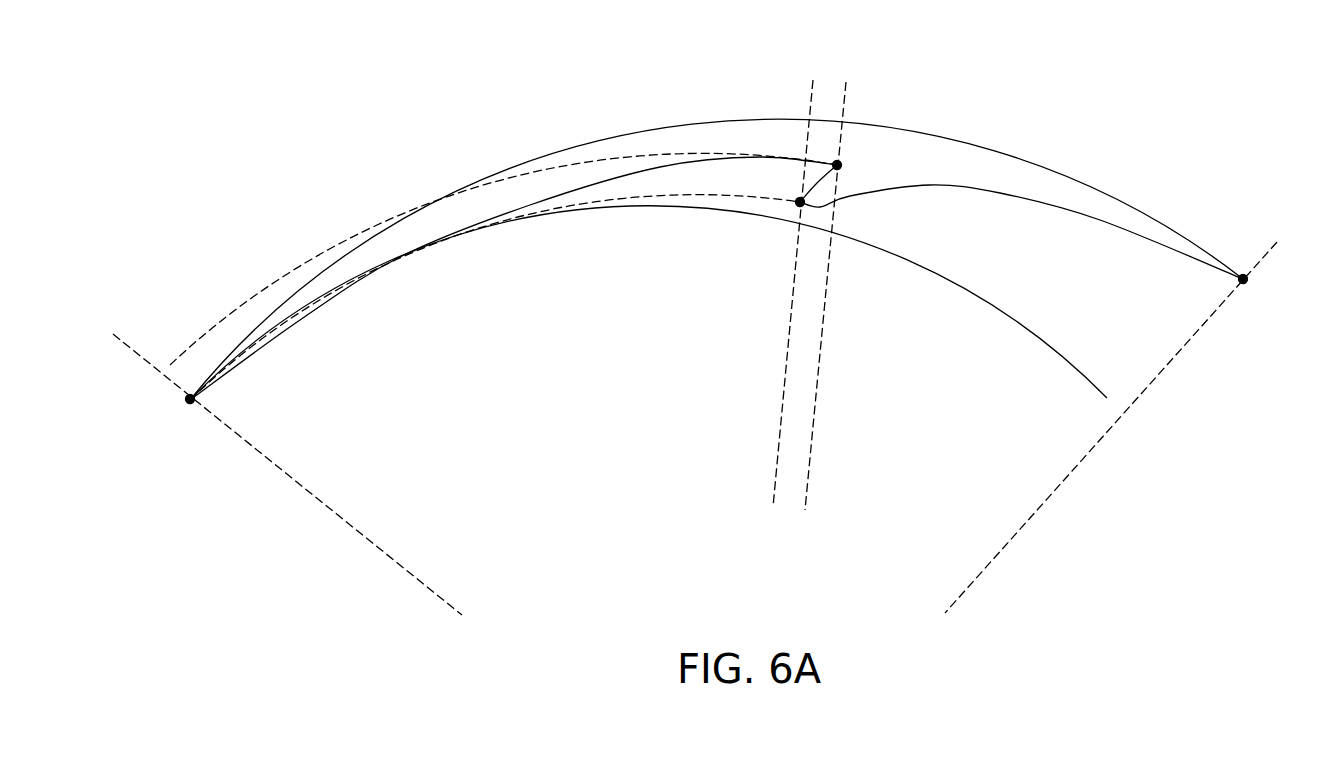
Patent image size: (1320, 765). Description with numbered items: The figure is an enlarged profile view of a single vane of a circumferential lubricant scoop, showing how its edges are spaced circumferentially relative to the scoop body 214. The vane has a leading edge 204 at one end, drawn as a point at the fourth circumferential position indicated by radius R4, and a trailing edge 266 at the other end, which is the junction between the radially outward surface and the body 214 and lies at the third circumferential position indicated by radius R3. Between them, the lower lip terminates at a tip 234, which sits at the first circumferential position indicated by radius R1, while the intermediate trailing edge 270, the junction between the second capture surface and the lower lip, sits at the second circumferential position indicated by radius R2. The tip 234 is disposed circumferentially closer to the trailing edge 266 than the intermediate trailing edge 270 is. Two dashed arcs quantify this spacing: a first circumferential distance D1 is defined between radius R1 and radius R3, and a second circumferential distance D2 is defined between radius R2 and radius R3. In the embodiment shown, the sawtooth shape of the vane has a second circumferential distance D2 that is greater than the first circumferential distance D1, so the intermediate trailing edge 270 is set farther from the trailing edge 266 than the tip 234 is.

The body 214 is at (633, 428).
The trailing edge 266 is at (187, 394).
The leading edge 204 is at (1242, 276).
The tip 234 is at (797, 201).
The intermediate trailing edge 270 is at (837, 162).
The first circumferential distance D1 is at (495, 297).
The second circumferential distance D2 is at (503, 259).
The radius R1 is at (798, 282).
The radius R2 is at (833, 284).
The radius R3 is at (279, 462).
The radius R4 is at (1124, 414).